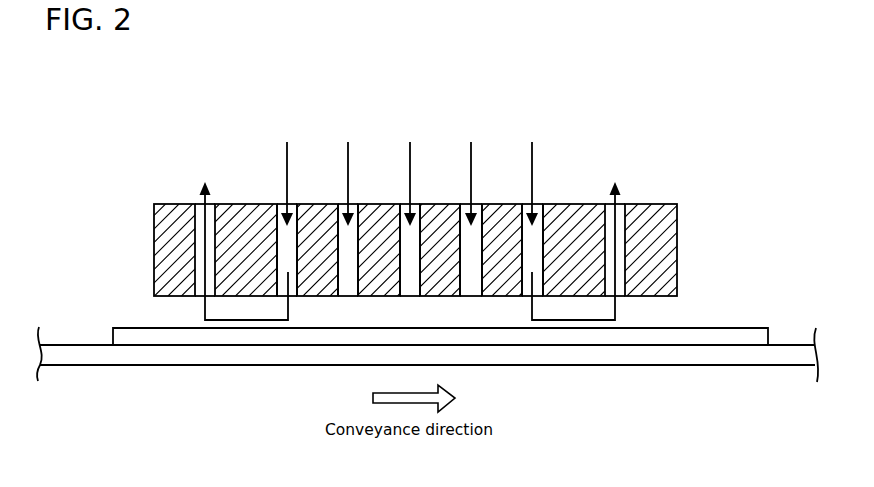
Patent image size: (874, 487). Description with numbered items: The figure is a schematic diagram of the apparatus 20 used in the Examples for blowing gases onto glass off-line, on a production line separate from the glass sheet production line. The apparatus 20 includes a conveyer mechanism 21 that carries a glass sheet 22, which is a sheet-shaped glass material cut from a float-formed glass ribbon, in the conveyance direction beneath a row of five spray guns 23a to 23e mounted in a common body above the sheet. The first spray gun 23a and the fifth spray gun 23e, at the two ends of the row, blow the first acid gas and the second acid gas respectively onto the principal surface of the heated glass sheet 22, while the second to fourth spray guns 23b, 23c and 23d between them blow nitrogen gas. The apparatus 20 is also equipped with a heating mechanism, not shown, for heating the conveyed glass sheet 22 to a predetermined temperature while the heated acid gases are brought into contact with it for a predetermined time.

The apparatus 20 is at (656, 92).
The conveyer mechanism 21 is at (85, 364).
The glass sheet 22 is at (135, 334).
The first spray gun 23a is at (282, 206).
The second spray gun 23b is at (342, 206).
The third spray gun 23c is at (405, 206).
The fourth spray gun 23d is at (475, 206).
The fifth spray gun 23e is at (540, 206).